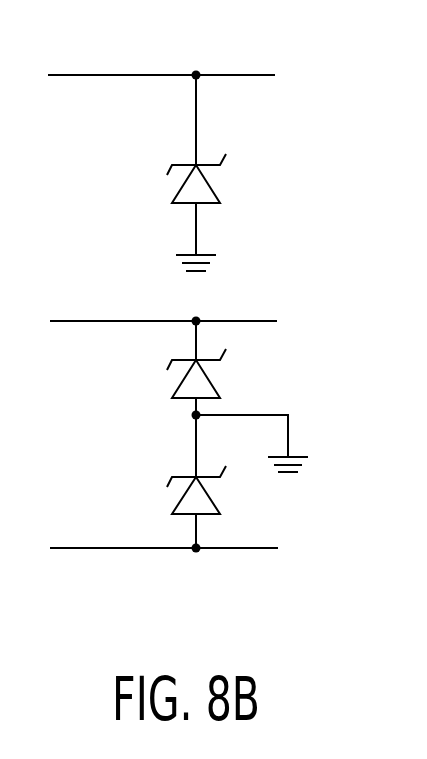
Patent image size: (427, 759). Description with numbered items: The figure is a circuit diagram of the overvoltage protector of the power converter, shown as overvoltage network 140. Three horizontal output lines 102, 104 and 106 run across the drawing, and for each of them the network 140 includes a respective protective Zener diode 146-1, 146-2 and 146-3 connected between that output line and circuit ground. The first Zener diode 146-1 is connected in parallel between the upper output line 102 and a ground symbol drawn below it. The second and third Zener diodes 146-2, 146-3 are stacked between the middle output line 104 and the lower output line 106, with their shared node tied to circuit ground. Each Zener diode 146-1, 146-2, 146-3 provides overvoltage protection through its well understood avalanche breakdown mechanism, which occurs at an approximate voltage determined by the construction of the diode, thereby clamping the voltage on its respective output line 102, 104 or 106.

The output line 102 is at (75, 75).
The output line 104 is at (77, 321).
The output line 106 is at (99, 548).
The overvoltage network 140 is at (318, 154).
The protective Zener diode 146-1 is at (173, 203).
The protective Zener diode 146-2 is at (173, 398).
The protective Zener diode 146-3 is at (173, 514).